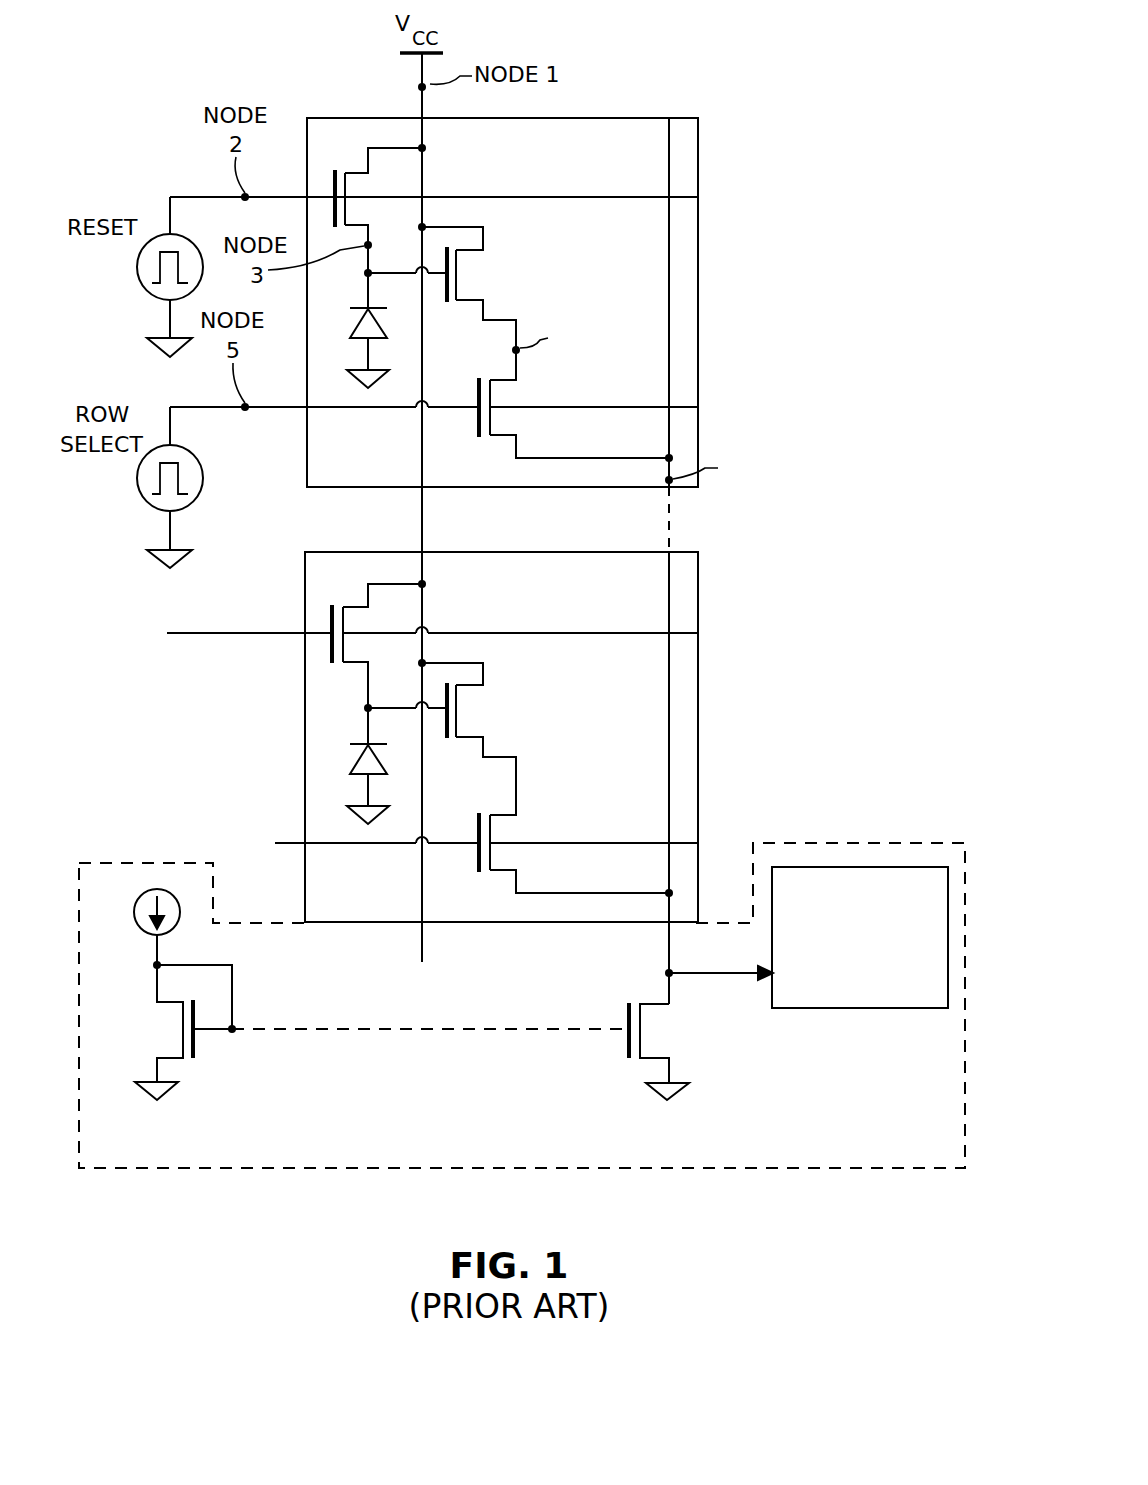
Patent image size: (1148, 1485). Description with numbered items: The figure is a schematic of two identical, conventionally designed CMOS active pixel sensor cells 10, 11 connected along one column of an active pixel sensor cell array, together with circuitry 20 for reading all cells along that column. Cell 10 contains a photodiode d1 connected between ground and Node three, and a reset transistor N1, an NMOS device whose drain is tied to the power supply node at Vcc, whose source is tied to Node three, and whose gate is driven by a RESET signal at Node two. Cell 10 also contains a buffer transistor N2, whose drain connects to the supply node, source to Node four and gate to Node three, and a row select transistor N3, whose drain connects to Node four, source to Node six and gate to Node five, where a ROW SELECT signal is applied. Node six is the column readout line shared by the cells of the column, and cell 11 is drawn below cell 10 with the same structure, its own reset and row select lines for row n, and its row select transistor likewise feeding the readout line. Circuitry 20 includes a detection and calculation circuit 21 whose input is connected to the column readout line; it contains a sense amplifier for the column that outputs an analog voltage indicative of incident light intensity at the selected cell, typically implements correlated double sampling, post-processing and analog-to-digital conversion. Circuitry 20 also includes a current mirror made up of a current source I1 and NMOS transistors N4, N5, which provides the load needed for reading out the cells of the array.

The CMOS active pixel sensor cell 10 is at (557, 271).
The CMOS active pixel sensor cell 11 is at (510, 552).
The circuitry 20 is at (522, 987).
The detection and calculation circuit 21 is at (812, 867).
The reset transistor N1 is at (375, 225).
The buffer transistor N2 is at (467, 301).
The row select transistor N3 is at (556, 408).
The NMOS transistor N4 is at (181, 1032).
The NMOS transistor N5 is at (701, 1033).
The photodiode d1 is at (353, 348).
The current source I1 is at (148, 935).